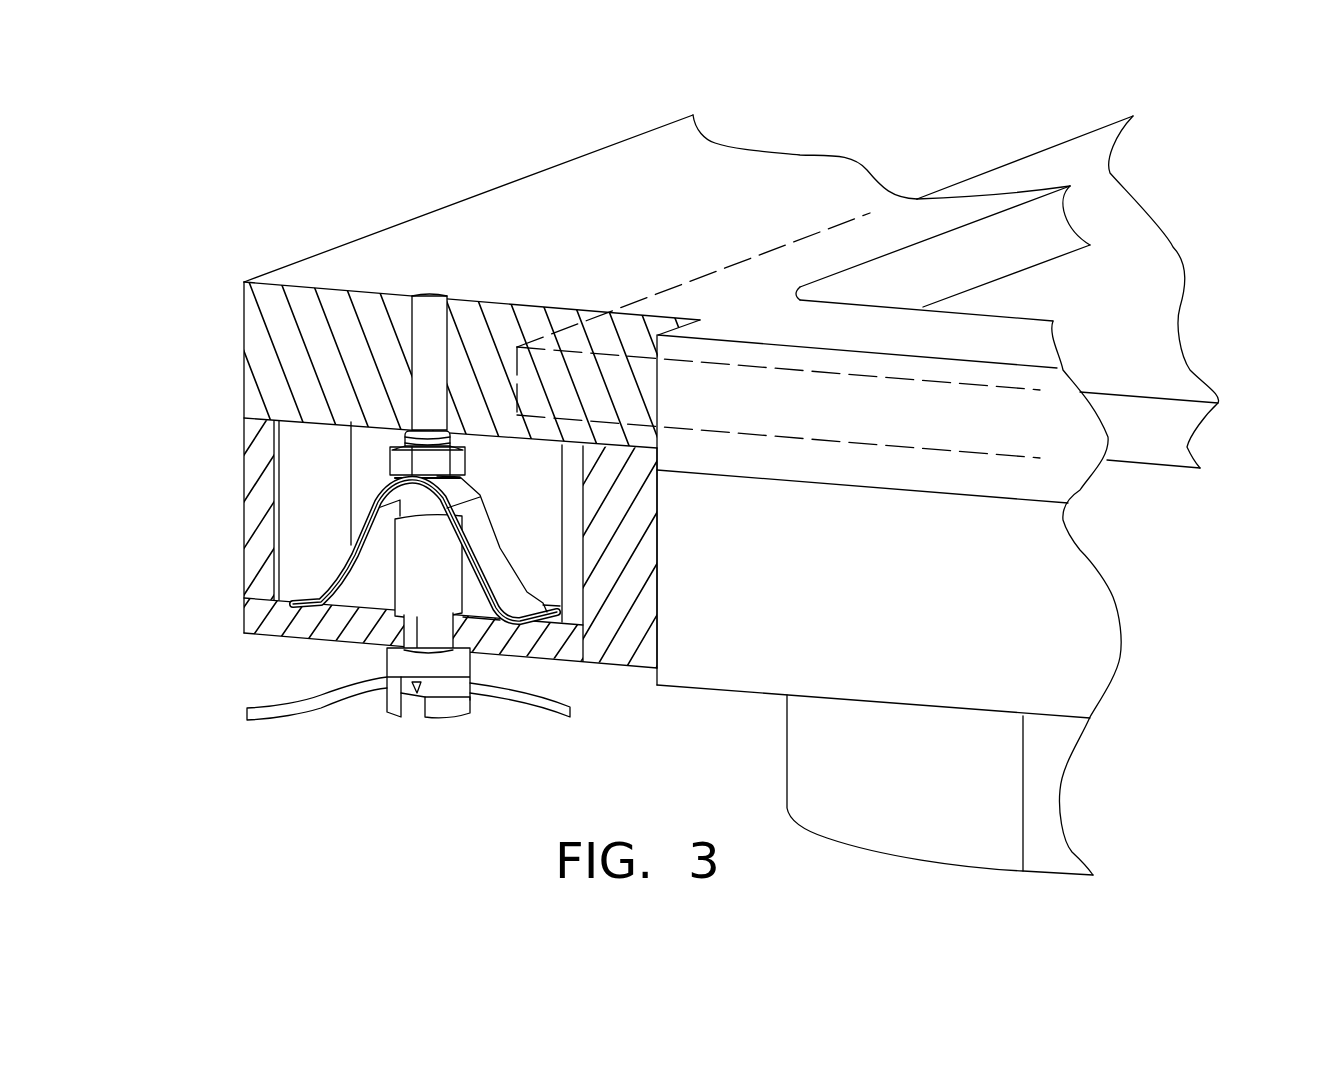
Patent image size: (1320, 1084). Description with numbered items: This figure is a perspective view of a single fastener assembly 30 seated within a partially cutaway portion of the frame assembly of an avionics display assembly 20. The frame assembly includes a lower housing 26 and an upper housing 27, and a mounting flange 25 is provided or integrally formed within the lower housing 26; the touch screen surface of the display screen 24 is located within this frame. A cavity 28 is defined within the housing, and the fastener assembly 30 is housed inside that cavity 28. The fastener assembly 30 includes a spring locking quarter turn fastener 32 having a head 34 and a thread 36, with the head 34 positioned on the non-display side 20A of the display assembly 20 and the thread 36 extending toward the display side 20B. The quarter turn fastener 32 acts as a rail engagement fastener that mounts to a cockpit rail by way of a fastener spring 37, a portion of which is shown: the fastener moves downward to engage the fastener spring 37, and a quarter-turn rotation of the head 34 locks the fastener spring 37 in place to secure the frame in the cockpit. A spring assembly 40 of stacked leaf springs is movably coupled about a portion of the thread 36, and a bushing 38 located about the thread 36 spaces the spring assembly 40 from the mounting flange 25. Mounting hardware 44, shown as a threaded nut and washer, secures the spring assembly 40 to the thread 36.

The avionics display assembly 20 is at (1203, 114).
The non-display side 20A is at (622, 668).
The display side 20B is at (423, 227).
The display screen 24 is at (1120, 250).
The mounting flange 25 is at (482, 633).
The lower housing 26 is at (258, 508).
The upper housing 27 is at (262, 328).
The cavity 28 is at (380, 478).
The fastener assembly 30 is at (372, 743).
The spring locking quarter turn fastener 32 is at (480, 717).
The head 34 is at (401, 665).
The thread 36 is at (417, 634).
The fastener spring 37 is at (565, 718).
The bushing 38 is at (418, 578).
The spring assembly 40 is at (497, 508).
The mounting hardware 44 is at (377, 442).